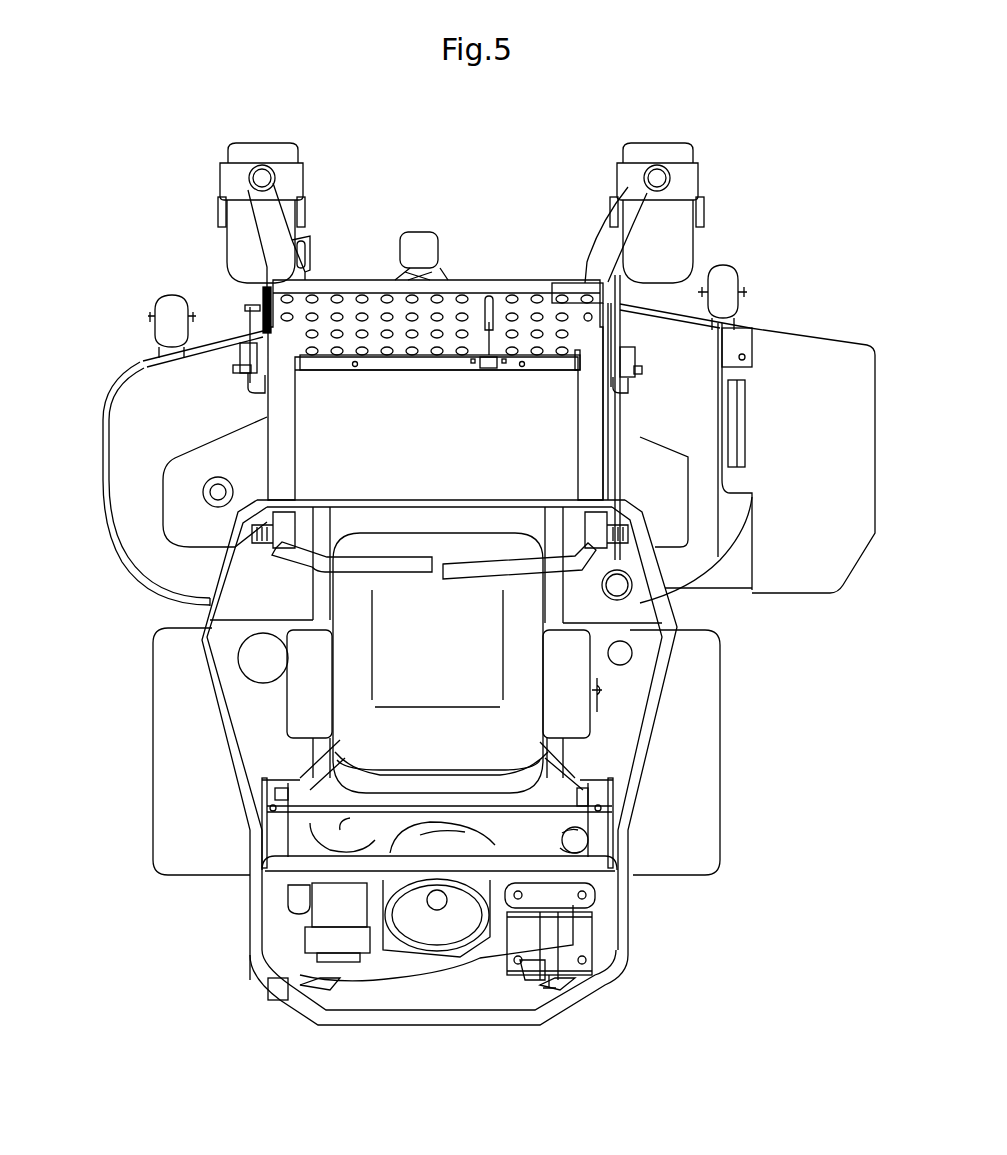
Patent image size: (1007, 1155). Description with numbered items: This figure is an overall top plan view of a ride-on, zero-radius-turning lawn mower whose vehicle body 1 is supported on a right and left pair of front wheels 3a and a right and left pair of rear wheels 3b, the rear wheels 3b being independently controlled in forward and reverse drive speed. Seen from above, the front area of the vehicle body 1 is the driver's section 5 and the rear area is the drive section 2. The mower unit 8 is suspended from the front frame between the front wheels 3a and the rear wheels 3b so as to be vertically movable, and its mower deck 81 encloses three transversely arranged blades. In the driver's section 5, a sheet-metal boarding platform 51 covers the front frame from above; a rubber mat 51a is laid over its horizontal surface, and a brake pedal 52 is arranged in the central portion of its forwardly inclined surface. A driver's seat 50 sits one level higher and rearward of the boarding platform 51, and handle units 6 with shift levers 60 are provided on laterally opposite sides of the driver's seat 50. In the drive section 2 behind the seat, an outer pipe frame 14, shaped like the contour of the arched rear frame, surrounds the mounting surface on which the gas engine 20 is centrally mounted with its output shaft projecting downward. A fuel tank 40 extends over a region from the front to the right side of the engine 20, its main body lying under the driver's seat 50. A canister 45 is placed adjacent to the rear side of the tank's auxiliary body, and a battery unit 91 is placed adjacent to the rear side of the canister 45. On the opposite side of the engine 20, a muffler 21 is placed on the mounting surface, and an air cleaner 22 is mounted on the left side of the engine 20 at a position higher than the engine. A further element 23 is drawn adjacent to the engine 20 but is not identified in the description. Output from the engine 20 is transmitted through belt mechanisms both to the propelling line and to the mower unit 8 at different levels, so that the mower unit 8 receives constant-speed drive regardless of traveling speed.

The vehicle body 1 is at (478, 207).
The drive section 2 is at (242, 910).
The front wheels 3a is at (243, 148).
The rear wheels 3b is at (166, 787).
The driver's section 5 is at (371, 525).
The handle units 6 is at (438, 663).
The mower unit 8 is at (131, 345).
The outer pipe frame 14 is at (521, 1022).
The gas engine 20 is at (394, 955).
The muffler 21 is at (250, 980).
The air cleaner 22 is at (305, 940).
The output pulley 23 is at (395, 980).
The fuel tank 40 is at (521, 830).
The canister 45 is at (598, 893).
The driver's seat 50 is at (511, 543).
The boarding platform 51 is at (357, 298).
The rubber mat 51a is at (530, 382).
The brake pedal 52 is at (488, 372).
The shift levers 60 is at (456, 578).
The mower deck 81 is at (665, 336).
The battery unit 91 is at (595, 948).